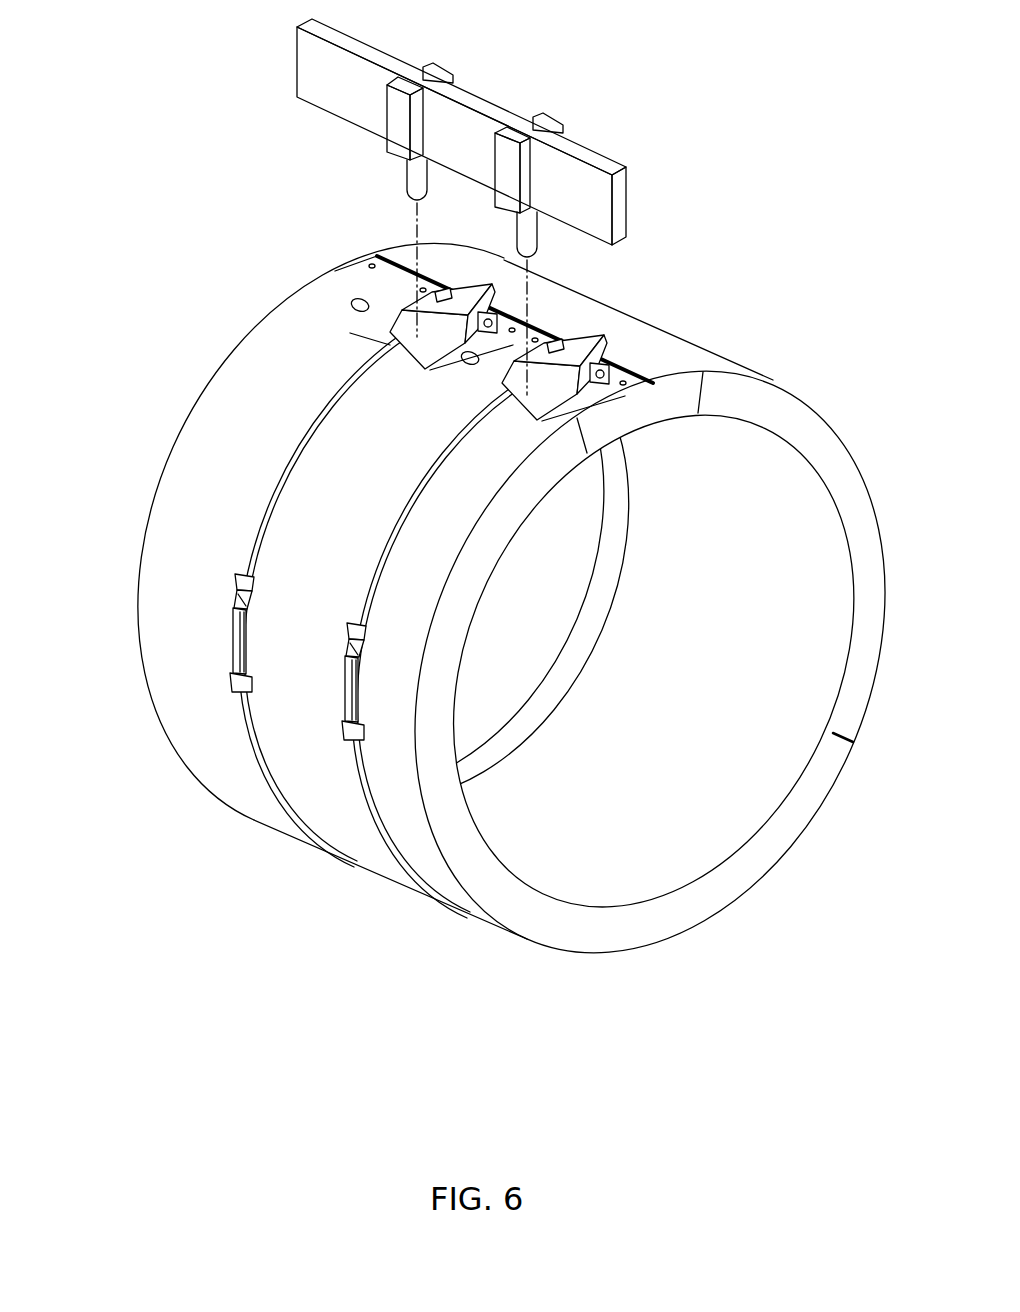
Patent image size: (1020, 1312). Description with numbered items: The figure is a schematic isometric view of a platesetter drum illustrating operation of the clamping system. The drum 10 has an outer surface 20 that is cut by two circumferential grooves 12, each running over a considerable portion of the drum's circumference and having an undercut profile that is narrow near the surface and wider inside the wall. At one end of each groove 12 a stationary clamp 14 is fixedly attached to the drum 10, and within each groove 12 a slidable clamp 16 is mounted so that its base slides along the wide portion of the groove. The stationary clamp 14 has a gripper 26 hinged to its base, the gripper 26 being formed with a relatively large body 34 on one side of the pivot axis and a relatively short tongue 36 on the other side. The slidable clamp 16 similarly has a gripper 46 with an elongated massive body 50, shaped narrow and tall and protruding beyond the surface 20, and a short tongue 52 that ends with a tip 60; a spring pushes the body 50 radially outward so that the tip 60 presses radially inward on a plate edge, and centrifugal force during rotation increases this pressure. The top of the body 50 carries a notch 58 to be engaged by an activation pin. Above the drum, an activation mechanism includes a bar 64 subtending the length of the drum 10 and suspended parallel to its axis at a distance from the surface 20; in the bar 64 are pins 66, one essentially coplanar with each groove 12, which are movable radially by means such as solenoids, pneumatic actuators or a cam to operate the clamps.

The drum 10 is at (785, 410).
The groove 12 is at (257, 540).
The stationary clamp 14 is at (625, 335).
The slidable clamp 16 is at (281, 720).
The outer surface 20 is at (200, 420).
The gripper 26 is at (392, 333).
The body 34 is at (380, 330).
The tongue 36 is at (397, 328).
The gripper 46 is at (325, 740).
The body 50 is at (236, 625).
The tongue 52 is at (232, 668).
The notch 58 is at (237, 590).
The tip 60 is at (235, 692).
The bar 64 is at (592, 193).
The pin 66 is at (417, 183).